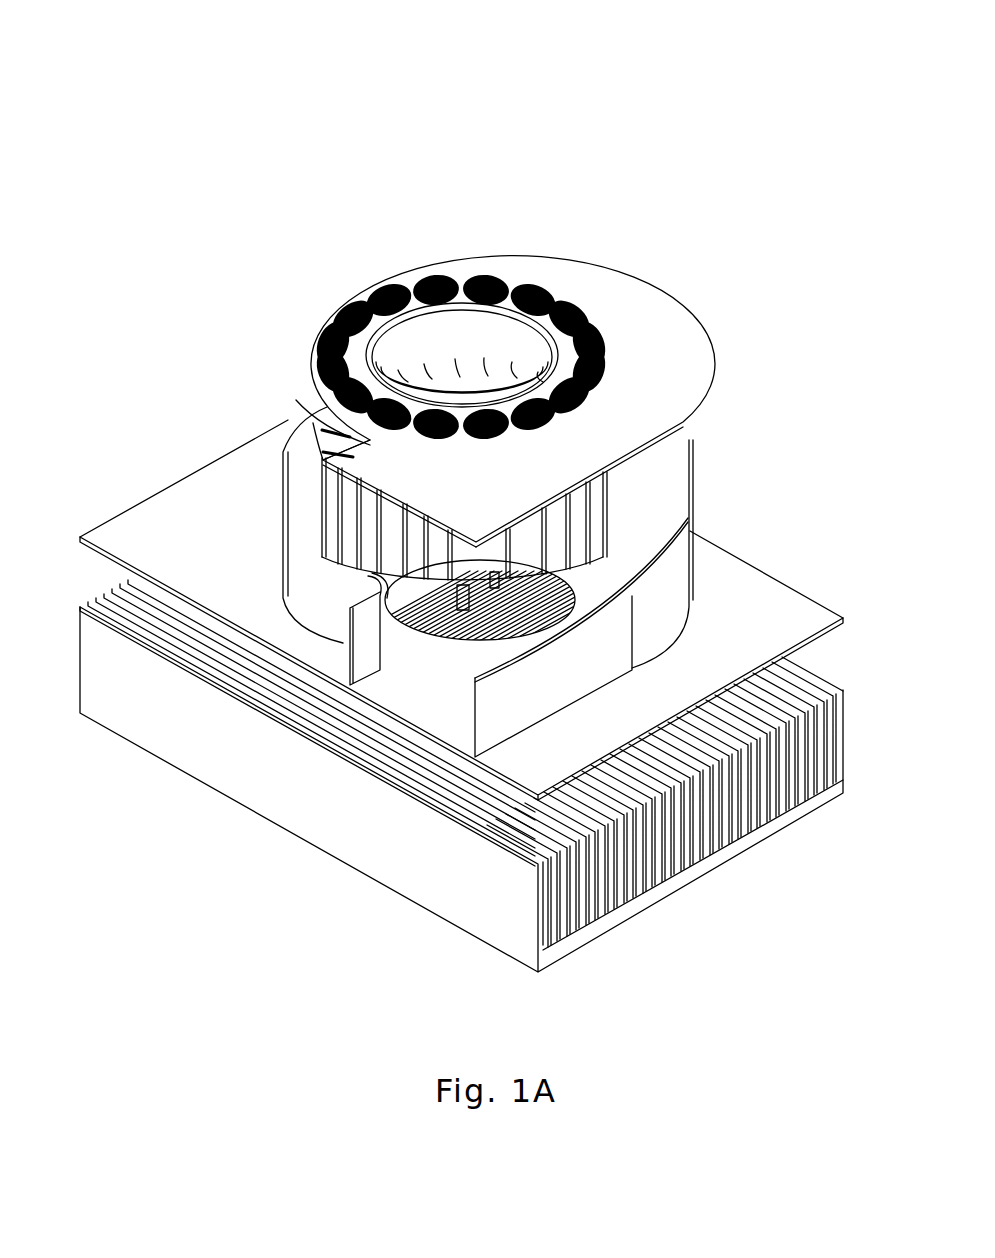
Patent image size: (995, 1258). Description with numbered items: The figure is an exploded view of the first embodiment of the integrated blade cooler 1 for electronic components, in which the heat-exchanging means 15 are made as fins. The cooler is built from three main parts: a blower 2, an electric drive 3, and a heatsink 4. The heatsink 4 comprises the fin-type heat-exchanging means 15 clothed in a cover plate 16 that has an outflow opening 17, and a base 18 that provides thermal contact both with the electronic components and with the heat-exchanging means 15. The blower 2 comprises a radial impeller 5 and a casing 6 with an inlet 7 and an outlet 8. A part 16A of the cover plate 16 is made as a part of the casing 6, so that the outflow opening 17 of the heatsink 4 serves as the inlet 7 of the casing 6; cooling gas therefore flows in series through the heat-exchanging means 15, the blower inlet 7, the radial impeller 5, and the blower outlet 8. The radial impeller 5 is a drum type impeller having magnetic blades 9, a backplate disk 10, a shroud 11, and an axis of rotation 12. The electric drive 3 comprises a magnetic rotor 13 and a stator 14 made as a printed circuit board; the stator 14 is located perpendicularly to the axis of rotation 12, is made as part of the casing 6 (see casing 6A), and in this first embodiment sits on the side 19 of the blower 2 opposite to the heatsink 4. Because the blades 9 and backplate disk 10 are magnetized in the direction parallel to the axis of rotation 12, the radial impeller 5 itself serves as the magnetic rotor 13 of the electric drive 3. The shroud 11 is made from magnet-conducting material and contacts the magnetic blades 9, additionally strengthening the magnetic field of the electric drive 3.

The integrated blade cooler 1 is at (283, 122).
The side of the blower 19 is at (518, 190).
The electric drive 3 is at (613, 252).
The stator 14 is at (390, 272).
The casing 6 is at (632, 318).
The part of the cover plate 16A is at (660, 438).
The blower 2 is at (703, 445).
The backplate disk 10 is at (323, 422).
The radial impeller 5 is at (345, 514).
The magnetic rotor 13 is at (320, 483).
The outflow opening 17 is at (600, 520).
The inlet 7 is at (605, 582).
The casing 6A is at (667, 587).
The cover plate 16 is at (790, 612).
The magnetic blades 9 is at (347, 525).
The shroud 11 is at (667, 585).
The heatsink 4 is at (205, 733).
The outlet 8 is at (427, 687).
The axis of rotation 12 is at (458, 595).
The heat-exchanging means 15 is at (745, 806).
The base 18 is at (642, 897).